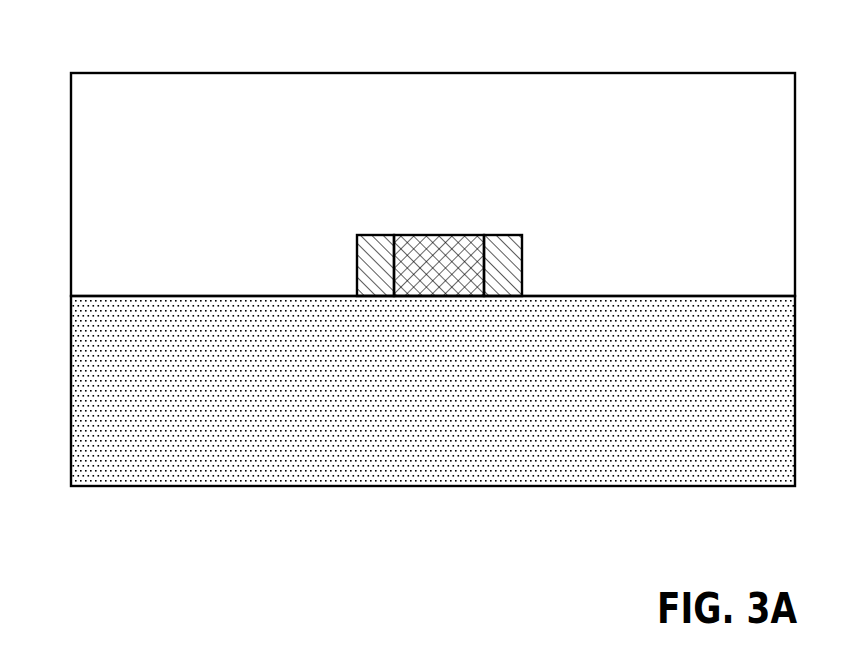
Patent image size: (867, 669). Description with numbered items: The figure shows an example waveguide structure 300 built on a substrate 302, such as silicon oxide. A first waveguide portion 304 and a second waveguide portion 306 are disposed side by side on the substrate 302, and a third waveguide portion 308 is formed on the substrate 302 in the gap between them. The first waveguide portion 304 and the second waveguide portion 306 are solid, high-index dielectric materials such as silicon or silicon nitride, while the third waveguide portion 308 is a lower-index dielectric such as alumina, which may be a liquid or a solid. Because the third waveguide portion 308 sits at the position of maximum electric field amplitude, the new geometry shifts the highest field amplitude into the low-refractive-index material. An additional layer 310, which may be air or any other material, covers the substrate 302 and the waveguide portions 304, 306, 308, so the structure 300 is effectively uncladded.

The structure 300 is at (187, 38).
The substrate 302 is at (632, 465).
The first waveguide portion 304 is at (365, 258).
The second waveguide portion 306 is at (512, 258).
The third waveguide portion 308 is at (423, 242).
The additional layer 310 is at (698, 93).